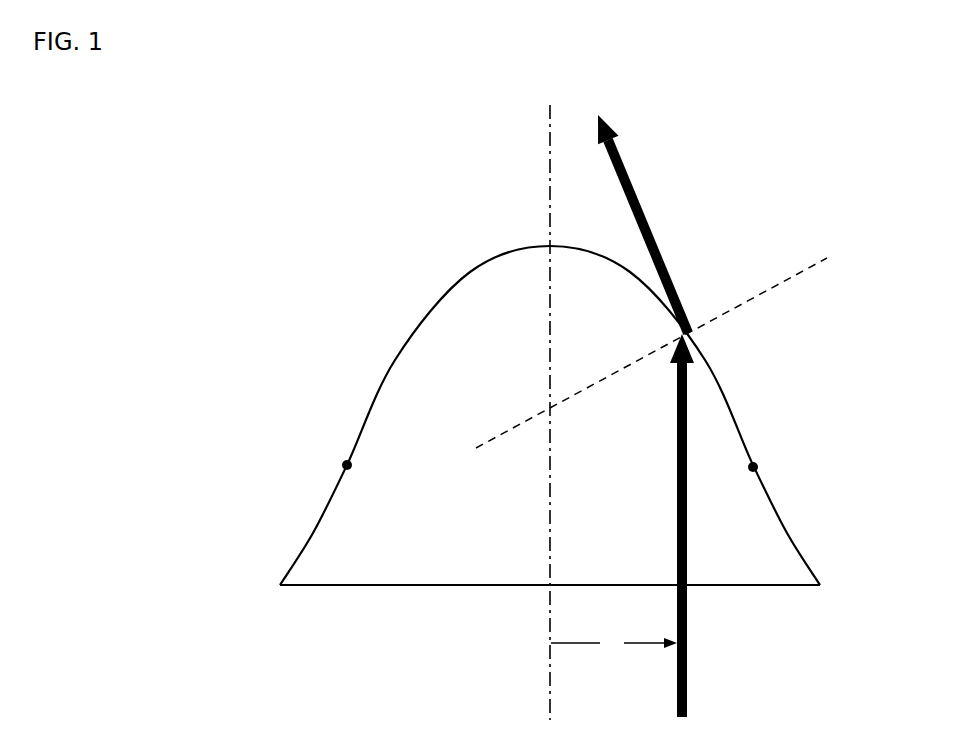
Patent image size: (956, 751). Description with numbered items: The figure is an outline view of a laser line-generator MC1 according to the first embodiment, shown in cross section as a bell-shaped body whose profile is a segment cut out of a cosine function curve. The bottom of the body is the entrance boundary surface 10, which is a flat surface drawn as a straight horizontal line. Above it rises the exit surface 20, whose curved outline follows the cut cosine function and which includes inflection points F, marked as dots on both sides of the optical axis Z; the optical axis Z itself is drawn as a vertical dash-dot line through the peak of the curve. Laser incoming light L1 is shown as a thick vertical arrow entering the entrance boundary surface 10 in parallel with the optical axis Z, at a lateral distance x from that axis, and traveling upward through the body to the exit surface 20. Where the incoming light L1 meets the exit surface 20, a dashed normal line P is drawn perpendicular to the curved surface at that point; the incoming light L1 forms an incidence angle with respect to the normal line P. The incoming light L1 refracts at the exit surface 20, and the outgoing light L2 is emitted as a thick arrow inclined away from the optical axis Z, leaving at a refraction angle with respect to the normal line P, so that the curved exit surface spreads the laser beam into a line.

The entrance boundary surface 10 is at (435, 587).
The exit surface 20 is at (470, 272).
The laser line-generator MC1 is at (430, 392).
The inflection points F is at (346, 465).
The optical axis Z is at (550, 122).
The laser incoming light L1 is at (688, 672).
The outgoing light L2 is at (632, 172).
The normal line P is at (803, 272).
The distance from optical axis x is at (614, 643).